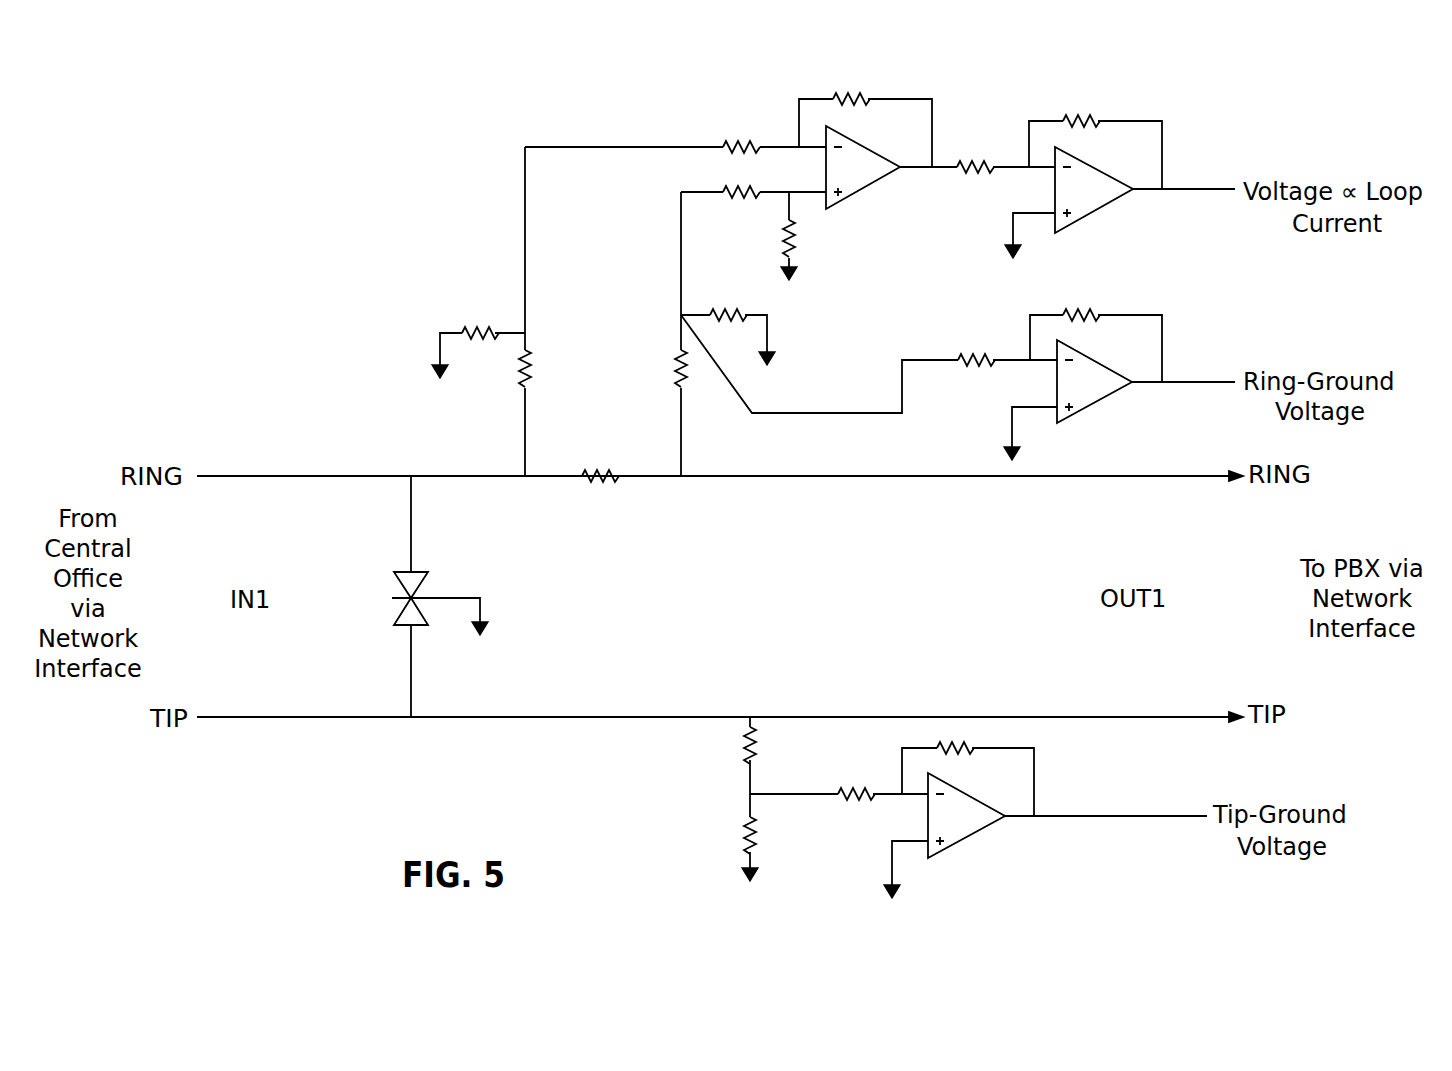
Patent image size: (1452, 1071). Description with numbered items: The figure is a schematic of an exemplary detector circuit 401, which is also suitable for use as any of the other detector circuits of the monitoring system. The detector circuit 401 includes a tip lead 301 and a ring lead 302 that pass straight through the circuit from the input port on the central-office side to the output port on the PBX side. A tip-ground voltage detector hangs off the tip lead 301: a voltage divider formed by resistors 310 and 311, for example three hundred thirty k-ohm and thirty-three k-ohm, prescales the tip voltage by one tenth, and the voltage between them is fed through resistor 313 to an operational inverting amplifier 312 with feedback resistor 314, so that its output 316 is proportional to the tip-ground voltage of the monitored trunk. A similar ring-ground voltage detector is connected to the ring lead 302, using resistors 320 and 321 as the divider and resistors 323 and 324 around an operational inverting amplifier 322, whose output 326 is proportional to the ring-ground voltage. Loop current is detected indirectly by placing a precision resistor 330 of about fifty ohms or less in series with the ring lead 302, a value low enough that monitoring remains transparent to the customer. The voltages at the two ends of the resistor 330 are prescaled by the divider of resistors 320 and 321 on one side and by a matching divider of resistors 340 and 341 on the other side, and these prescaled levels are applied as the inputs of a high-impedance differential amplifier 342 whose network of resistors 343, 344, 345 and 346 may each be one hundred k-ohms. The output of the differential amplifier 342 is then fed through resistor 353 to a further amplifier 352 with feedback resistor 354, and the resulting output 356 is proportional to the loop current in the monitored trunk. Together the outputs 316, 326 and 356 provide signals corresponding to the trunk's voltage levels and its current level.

The detector circuit 401 is at (372, 127).
The tip lead 301 is at (312, 720).
The ring lead 302 is at (285, 477).
The resistor 310 is at (740, 742).
The resistor 311 is at (740, 832).
The operational inverting amplifier 312 is at (972, 836).
The resistor 313 is at (856, 794).
The resistor 314 is at (972, 748).
The output 316 is at (1100, 815).
The resistor 320 is at (672, 365).
The resistor 321 is at (745, 315).
The operational inverting amplifier 322 is at (1100, 400).
The resistor 323 is at (980, 358).
The resistor 324 is at (1098, 315).
The output 326 is at (1205, 366).
The precision resistor 330 is at (591, 476).
The resistor 340 is at (517, 384).
The resistor 341 is at (472, 326).
The differential amplifier 342 is at (866, 188).
The resistor 343 is at (742, 144).
The resistor 344 is at (868, 99).
The resistor 345 is at (725, 192).
The resistor 346 is at (782, 238).
The amplifier 352 is at (1100, 207).
The resistor 353 is at (983, 167).
The resistor 354 is at (1098, 121).
The output 356 is at (1212, 170).